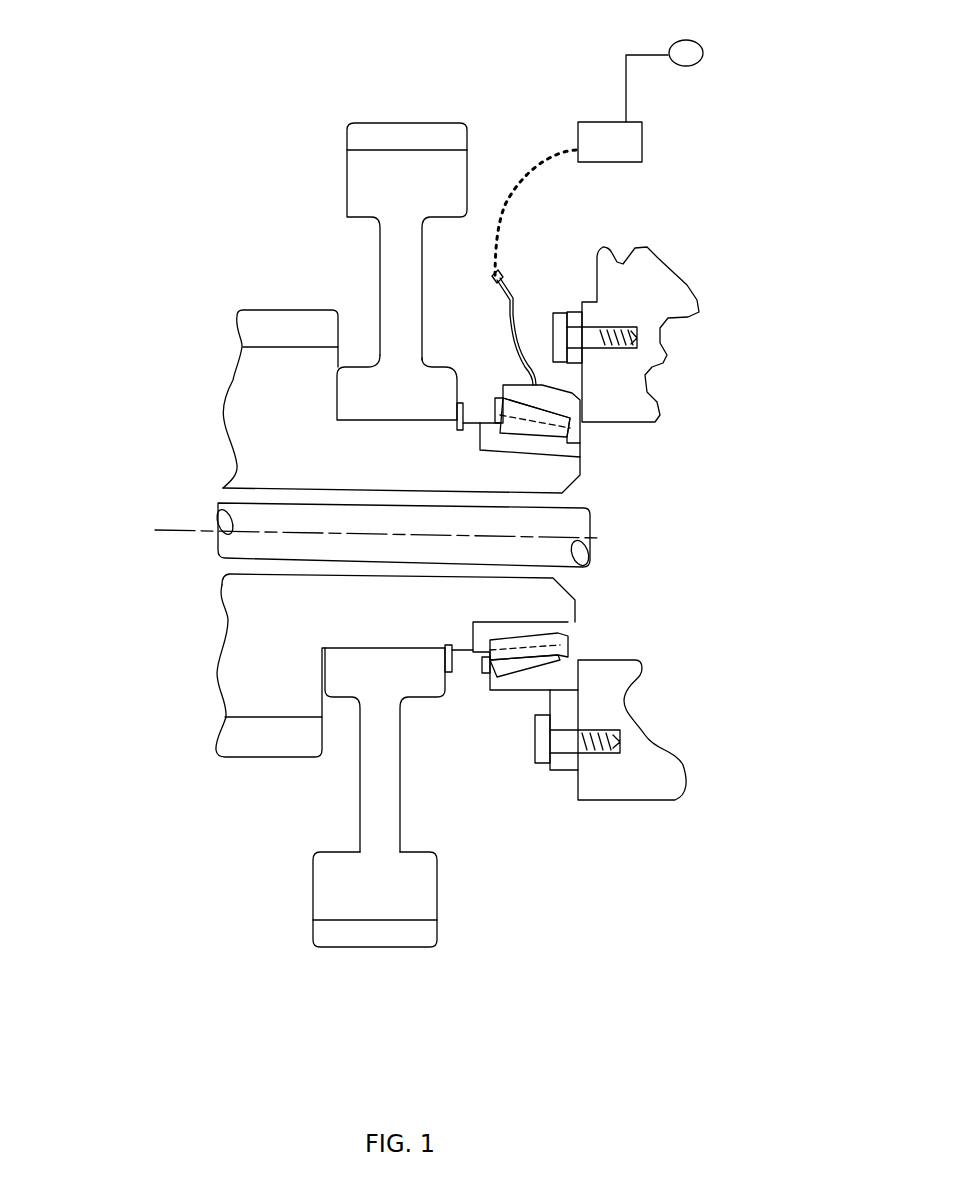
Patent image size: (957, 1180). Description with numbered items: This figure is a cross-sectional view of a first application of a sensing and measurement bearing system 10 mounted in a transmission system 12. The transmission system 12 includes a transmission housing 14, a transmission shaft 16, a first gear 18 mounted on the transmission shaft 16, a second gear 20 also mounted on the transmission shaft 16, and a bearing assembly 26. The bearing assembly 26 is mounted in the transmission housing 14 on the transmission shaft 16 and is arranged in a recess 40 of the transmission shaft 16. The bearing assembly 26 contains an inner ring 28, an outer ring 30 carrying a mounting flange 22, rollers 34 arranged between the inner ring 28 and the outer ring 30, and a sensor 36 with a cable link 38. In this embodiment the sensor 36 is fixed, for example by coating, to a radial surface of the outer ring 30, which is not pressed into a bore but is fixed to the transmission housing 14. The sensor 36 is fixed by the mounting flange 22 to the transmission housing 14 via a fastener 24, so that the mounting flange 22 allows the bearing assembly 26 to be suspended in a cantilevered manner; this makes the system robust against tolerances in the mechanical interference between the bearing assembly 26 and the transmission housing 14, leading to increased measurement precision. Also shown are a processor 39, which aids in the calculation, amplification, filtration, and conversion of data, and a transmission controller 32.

The sensing and measurement bearing system 10 is at (547, 295).
The transmission system 12 is at (215, 163).
The transmission housing 14 is at (650, 290).
The transmission shaft 16 is at (580, 475).
The first gear 18 is at (260, 320).
The second gear 20 is at (457, 130).
The mounting flange 22 is at (553, 775).
The fastener 24 is at (540, 750).
The bearing assembly 26 is at (618, 381).
The inner ring 28 is at (563, 447).
The outer ring 30 is at (643, 383).
The transmission controller 32 is at (703, 40).
The rollers 34 is at (560, 420).
The sensor 36 is at (547, 385).
The cable link 38 is at (500, 270).
The processor 39 is at (642, 137).
The recess 40 is at (612, 622).